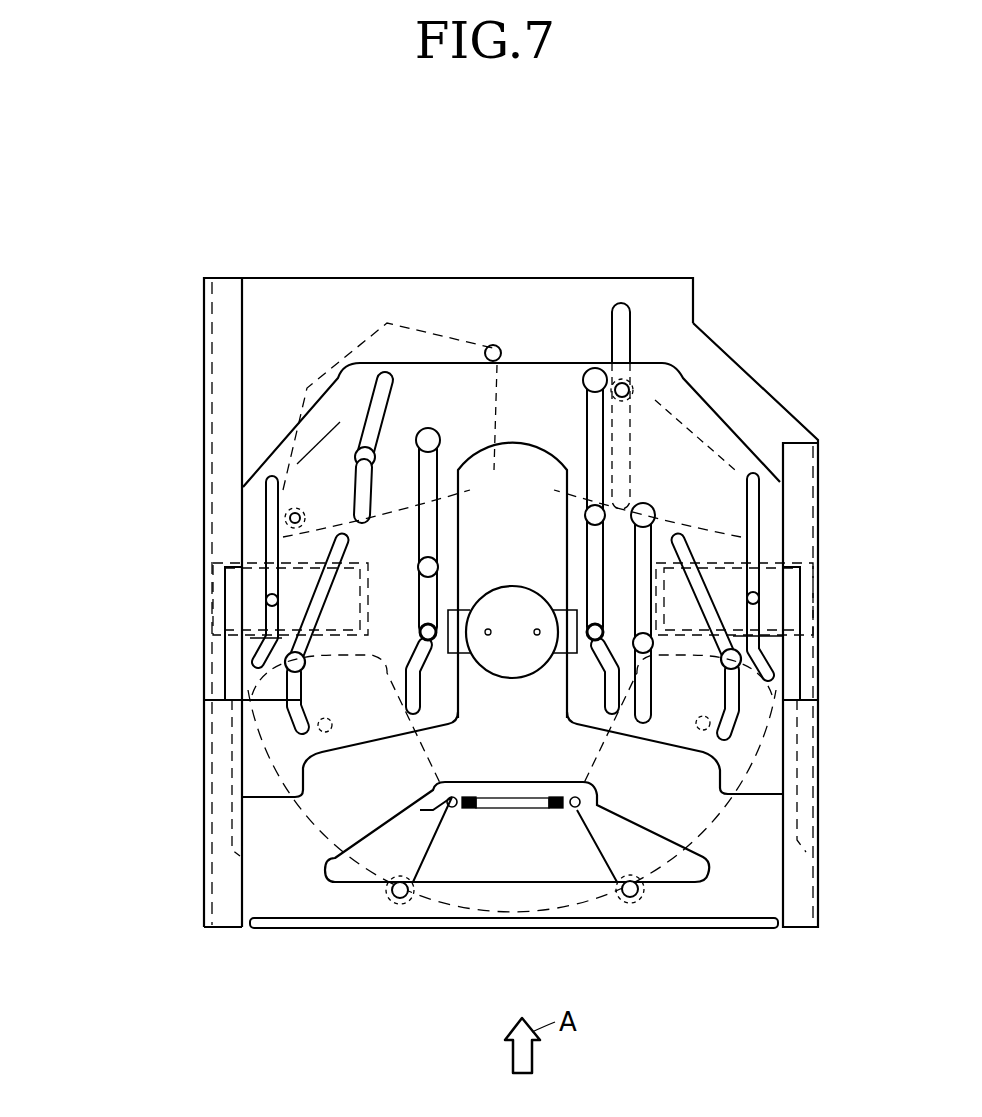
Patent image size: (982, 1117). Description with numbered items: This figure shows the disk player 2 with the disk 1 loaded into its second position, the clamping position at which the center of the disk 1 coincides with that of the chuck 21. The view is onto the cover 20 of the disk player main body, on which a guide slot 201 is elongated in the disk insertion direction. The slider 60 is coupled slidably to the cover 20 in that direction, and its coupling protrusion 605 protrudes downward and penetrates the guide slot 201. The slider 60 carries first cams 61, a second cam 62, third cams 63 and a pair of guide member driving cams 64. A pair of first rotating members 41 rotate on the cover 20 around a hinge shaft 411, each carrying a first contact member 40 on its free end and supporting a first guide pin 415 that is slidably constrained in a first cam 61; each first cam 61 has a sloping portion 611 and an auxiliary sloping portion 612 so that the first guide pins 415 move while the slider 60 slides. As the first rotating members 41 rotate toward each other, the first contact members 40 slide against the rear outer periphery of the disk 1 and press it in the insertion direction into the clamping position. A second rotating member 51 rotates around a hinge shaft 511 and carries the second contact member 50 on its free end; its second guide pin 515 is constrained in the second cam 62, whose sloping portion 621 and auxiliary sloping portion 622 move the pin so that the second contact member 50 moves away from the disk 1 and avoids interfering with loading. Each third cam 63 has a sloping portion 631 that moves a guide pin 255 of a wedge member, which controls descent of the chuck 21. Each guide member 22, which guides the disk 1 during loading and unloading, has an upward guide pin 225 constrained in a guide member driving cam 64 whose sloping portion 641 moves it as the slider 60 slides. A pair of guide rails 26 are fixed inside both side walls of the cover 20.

The disk 1 is at (500, 895).
The disk player 2 is at (30, 626).
The cover 20 is at (445, 290).
The guide slot 201 is at (625, 335).
The coupling protrusion 605 is at (625, 385).
The slider 60 is at (725, 405).
The second contact member 50 is at (495, 350).
The second rotating member 51 is at (343, 353).
The hinge shaft 511 is at (290, 515).
The second guide pin 515 is at (293, 431).
The second cam 62 is at (393, 432).
The sloping portion 621 is at (365, 447).
The auxiliary sloping portion 622 is at (352, 502).
The sloping portion 631 is at (613, 647).
The guide member driving cam 64 is at (262, 535).
The first cam 61 is at (310, 583).
The sloping portion 611 is at (310, 620).
The auxiliary sloping portion 612 is at (292, 728).
The sloping portion 641 is at (285, 662).
The guide member 22 is at (235, 590).
The guide pin 225 is at (265, 601).
The first guide pin 415 is at (250, 700).
The guide rail 26 is at (218, 820).
The third cam 63 is at (593, 703).
The chuck 21 is at (507, 578).
The guide pin 255 is at (423, 627).
The first rotating member 41 is at (387, 883).
The hinge shaft 411 is at (330, 734).
The first contact member 40 is at (400, 905).